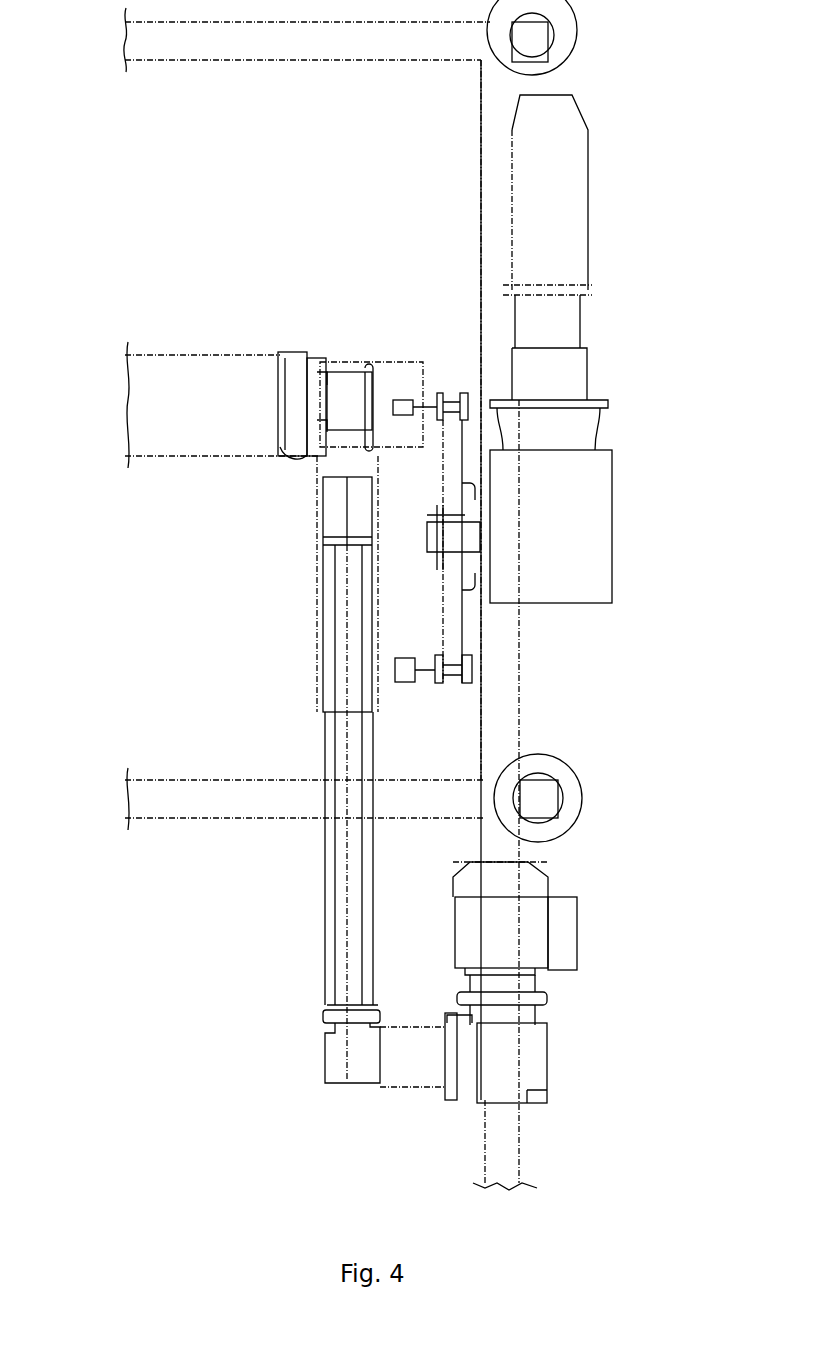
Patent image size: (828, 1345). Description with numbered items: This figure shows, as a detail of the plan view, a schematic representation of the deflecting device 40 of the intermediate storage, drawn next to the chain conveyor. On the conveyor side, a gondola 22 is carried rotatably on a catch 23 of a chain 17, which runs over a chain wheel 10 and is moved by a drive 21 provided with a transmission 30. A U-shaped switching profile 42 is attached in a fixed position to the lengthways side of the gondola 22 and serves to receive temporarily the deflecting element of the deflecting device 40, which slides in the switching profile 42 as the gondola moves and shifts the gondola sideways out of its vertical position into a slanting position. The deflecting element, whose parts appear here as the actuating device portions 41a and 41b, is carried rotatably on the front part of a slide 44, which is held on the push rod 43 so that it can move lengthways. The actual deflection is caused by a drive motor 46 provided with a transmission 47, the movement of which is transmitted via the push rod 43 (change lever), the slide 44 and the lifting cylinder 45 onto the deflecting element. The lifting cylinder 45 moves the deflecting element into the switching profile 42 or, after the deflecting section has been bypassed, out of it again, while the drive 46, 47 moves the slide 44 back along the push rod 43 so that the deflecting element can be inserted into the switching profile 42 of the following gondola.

The chain wheel 10 is at (450, 627).
The chain 17 is at (432, 398).
The drive 21 is at (567, 203).
The gondola 22 is at (160, 372).
The catch 23 is at (400, 682).
The transmission 30 is at (592, 545).
The deflecting device 40 is at (147, 684).
The plate 41a is at (318, 365).
The plate 41b is at (303, 455).
The switching profile 42 is at (285, 355).
The push rod 43 is at (328, 762).
The slide 44 is at (317, 528).
The lifting cylinder 45 is at (355, 380).
The drive motor 46 is at (542, 940).
The transmission 47 is at (540, 1080).